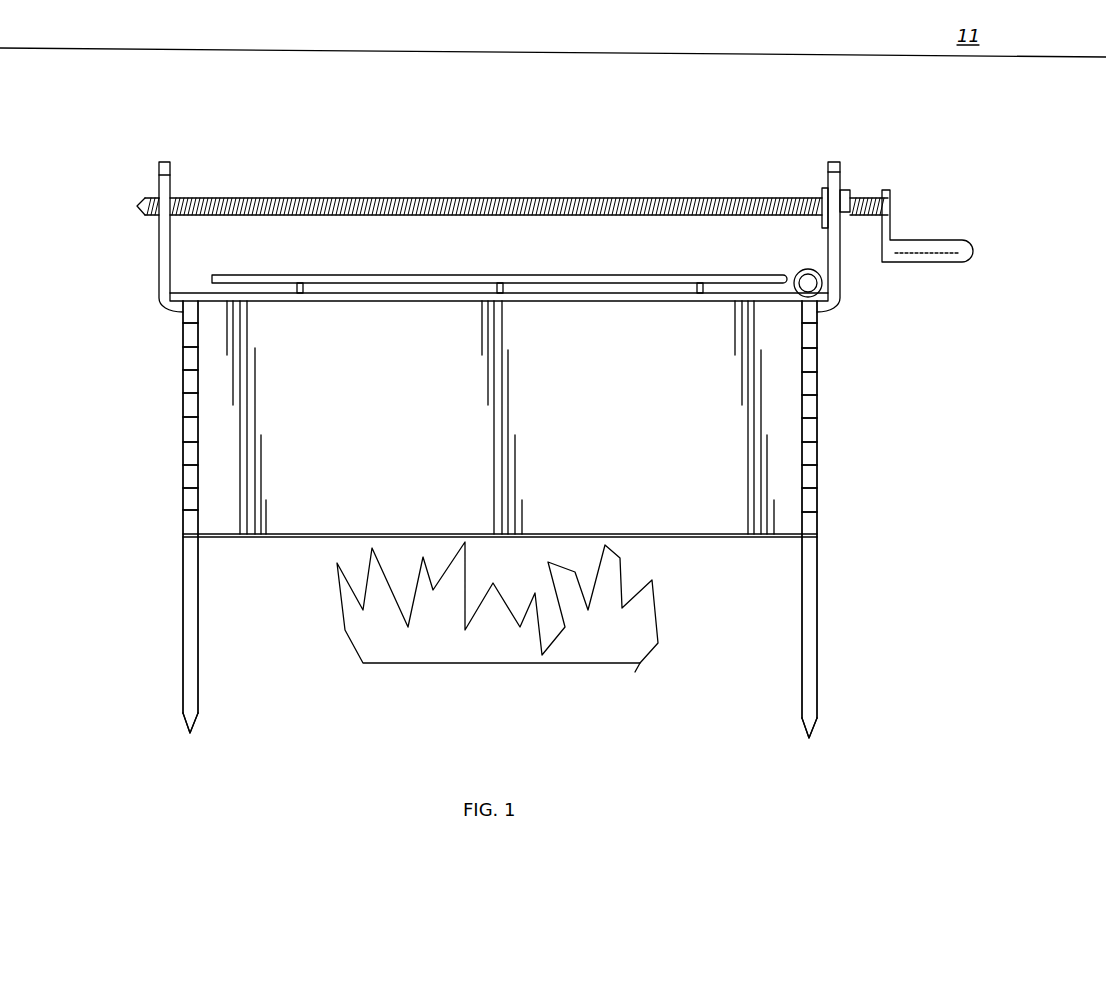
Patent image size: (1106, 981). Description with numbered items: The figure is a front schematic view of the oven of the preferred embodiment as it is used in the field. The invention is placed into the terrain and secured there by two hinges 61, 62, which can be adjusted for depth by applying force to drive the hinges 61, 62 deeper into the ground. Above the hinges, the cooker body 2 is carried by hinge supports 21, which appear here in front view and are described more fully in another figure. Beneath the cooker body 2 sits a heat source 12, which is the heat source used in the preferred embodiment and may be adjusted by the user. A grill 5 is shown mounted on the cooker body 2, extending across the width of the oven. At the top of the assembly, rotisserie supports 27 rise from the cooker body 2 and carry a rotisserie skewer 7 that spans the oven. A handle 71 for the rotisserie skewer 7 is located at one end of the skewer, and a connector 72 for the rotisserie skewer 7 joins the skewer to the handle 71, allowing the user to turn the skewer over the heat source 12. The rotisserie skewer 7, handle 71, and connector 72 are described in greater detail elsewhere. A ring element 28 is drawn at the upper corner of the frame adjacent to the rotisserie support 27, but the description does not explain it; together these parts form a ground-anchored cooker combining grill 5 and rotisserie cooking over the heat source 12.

The rotisserie supports 27 is at (158, 185).
The rotisserie skewer 7 is at (475, 197).
The connector 72 is at (862, 148).
The handle 71 is at (972, 240).
The grill 5 is at (600, 277).
The ring pivot on right bracket 28 is at (838, 272).
The hinge supports 21 is at (190, 498).
The cooker body 2 is at (307, 522).
The heat source 12 is at (650, 625).
The hinge 61 is at (188, 630).
The hinge 62 is at (812, 625).